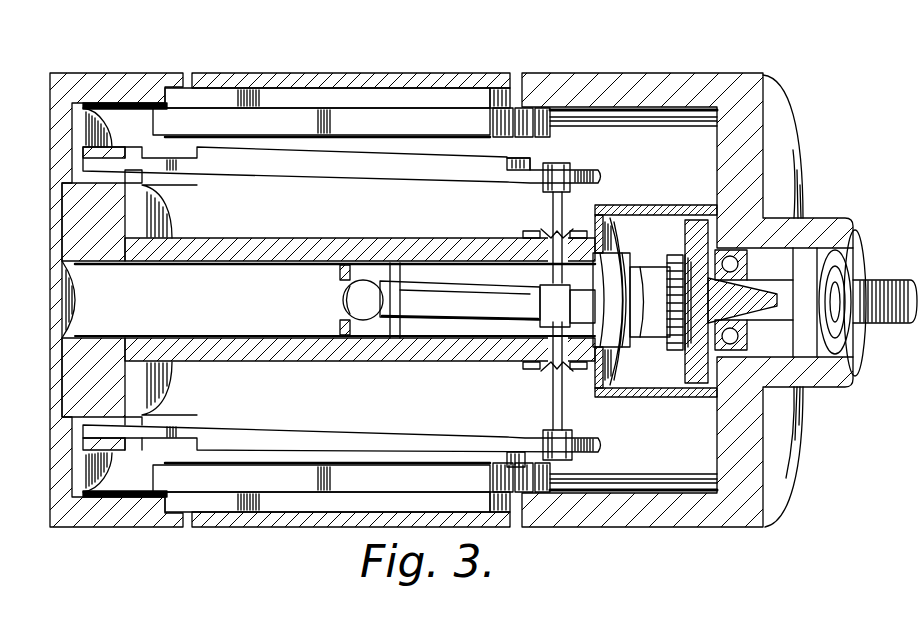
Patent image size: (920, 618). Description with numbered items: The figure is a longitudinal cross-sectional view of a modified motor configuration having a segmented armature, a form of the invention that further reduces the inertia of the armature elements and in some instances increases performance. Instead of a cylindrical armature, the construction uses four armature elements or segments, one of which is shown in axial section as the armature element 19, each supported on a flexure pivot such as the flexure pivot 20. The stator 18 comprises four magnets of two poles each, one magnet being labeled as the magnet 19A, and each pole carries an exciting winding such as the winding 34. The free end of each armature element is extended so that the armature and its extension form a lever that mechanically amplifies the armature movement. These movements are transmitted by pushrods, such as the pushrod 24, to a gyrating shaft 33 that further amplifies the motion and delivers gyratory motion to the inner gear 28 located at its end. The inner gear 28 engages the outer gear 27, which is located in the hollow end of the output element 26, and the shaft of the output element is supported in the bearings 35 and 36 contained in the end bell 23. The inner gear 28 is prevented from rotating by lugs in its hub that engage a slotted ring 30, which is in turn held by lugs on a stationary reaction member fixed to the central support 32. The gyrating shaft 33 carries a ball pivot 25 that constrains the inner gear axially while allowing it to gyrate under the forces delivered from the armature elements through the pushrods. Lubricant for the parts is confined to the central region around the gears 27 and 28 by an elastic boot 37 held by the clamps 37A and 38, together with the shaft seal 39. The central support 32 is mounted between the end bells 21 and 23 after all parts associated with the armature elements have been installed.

The stator 18 is at (277, 80).
The armature element 19 is at (283, 160).
The magnet 19A is at (387, 100).
The flexure pivot 20 is at (178, 148).
The end bell 21 is at (125, 512).
The end bell 23 is at (780, 160).
The pushrod 24 is at (570, 208).
The ball pivot 25 is at (343, 300).
The output element 26 is at (887, 325).
The outer gear 27 is at (678, 212).
The inner gear 28 is at (692, 353).
The slotted ring 30 is at (622, 352).
The central support 32 is at (492, 352).
The gyrating shaft 33 is at (442, 303).
The exciting winding 34 is at (433, 120).
The bearing 35 is at (747, 337).
The bearing 36 is at (812, 353).
The elastic boot 37 is at (548, 230).
The clamp 37A is at (533, 233).
The clamp 38 is at (620, 218).
The shaft seal 39 is at (857, 257).